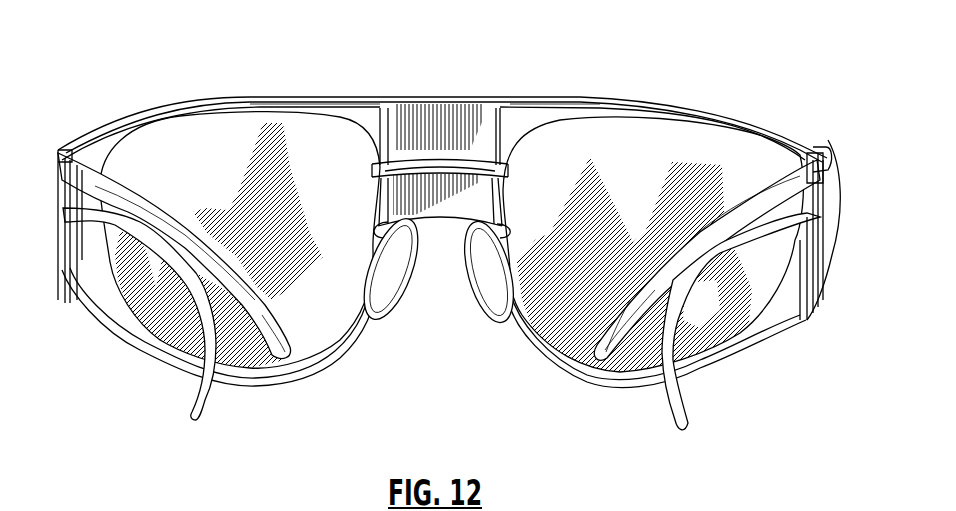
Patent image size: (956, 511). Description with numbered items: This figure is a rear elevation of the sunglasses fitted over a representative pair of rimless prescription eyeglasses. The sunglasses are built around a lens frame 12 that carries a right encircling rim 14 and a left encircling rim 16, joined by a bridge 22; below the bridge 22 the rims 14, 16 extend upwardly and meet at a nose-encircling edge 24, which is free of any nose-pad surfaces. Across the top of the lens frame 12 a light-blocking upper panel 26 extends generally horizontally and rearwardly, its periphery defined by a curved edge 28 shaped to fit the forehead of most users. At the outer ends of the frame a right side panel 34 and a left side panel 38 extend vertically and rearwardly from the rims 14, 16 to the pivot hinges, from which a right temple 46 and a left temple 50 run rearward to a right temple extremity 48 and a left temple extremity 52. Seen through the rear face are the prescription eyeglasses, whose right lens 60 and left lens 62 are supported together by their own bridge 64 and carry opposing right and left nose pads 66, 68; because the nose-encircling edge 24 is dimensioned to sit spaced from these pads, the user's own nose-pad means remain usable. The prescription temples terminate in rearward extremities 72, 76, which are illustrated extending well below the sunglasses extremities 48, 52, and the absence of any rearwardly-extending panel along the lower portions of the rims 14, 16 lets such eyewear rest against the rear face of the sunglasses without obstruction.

The lens frame 12 is at (779, 134).
The right encircling rim 14 is at (547, 362).
The left encircling rim 16 is at (163, 358).
The bridge 22 is at (436, 143).
The nose-encircling edge 24 is at (450, 217).
The light-blocking upper panel 26 is at (383, 98).
The curved edge 28 is at (536, 100).
The right side panel 34 is at (840, 170).
The left side panel 38 is at (63, 268).
The right temple 46 is at (757, 212).
The right temple extremity 48 is at (600, 360).
The left temple 50 is at (131, 200).
The left temple extremity 52 is at (283, 367).
The right lens 60 is at (617, 233).
The left lens 62 is at (239, 231).
The bridge 64 is at (467, 160).
The right nose pad 66 is at (485, 293).
The left nose pad 68 is at (387, 307).
The rearward extremity 72 is at (667, 403).
The rearward extremity 76 is at (192, 418).